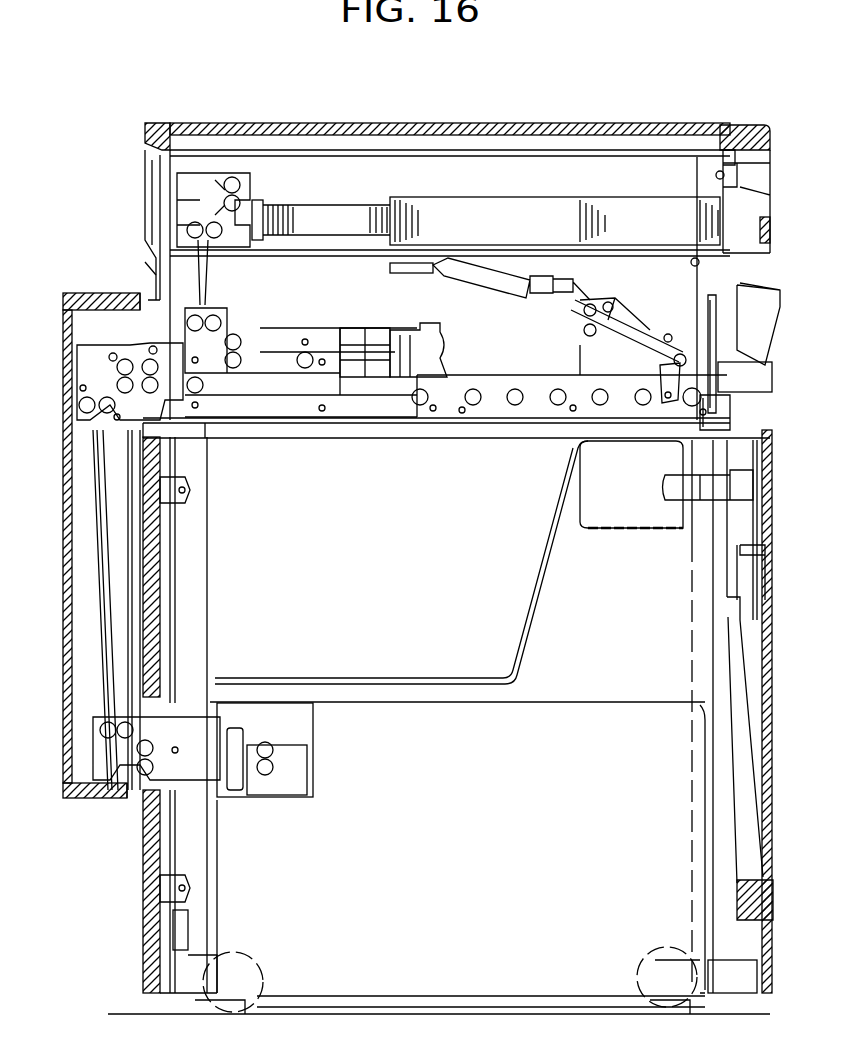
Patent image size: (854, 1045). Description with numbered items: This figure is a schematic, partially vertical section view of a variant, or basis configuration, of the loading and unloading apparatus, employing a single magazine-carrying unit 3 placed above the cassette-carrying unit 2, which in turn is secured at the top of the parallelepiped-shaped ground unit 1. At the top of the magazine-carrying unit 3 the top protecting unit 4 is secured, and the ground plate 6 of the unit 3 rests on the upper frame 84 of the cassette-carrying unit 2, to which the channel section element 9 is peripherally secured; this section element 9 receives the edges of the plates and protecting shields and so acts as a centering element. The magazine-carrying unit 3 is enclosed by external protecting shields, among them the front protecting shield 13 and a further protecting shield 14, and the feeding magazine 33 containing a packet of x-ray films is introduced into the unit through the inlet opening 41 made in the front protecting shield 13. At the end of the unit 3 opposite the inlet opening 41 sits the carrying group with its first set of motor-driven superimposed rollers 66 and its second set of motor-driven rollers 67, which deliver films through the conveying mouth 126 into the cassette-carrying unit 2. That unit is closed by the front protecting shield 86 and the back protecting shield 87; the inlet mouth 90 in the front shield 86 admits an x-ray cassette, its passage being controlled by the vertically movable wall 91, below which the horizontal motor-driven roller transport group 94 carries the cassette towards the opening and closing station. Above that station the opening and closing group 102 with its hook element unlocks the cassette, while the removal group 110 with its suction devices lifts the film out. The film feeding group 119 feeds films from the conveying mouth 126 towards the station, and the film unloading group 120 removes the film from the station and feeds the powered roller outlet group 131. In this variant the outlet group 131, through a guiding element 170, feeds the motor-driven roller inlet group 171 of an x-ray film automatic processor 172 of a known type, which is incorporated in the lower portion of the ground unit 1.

The ground unit 1 is at (139, 878).
The cassette-carrying unit 2 is at (776, 292).
The magazine-carrying unit 3 is at (138, 192).
The top protecting unit 4 is at (390, 124).
The ground plate 6 is at (333, 245).
The channel section element 9 is at (717, 170).
The front protecting shield 13 is at (768, 133).
The protecting shield 14 is at (146, 170).
The feeding magazine 33 is at (523, 197).
The inlet opening 41 is at (721, 153).
The first set of motor-driven superimposed rollers 66 is at (240, 182).
The second set of motor-driven rollers 67 is at (217, 237).
The upper frame 84 is at (675, 247).
The front protecting shield 86 is at (745, 378).
The back protecting shield 87 is at (143, 263).
The inlet mouth 90 is at (713, 390).
The vertically movable wall 91 is at (708, 337).
The horizontal motor-driven roller transport group 94 is at (531, 421).
The opening and closing group 102 is at (589, 281).
The removal group 110 is at (449, 345).
The film feeding group 119 is at (314, 322).
The film unloading group 120 is at (291, 429).
The conveying mouth 126 is at (212, 288).
The powered roller outlet group 131 is at (91, 357).
The guiding element 170 is at (113, 570).
The motor-driven roller inlet group 171 is at (104, 765).
The x-ray film automatic processor 172 is at (413, 686).